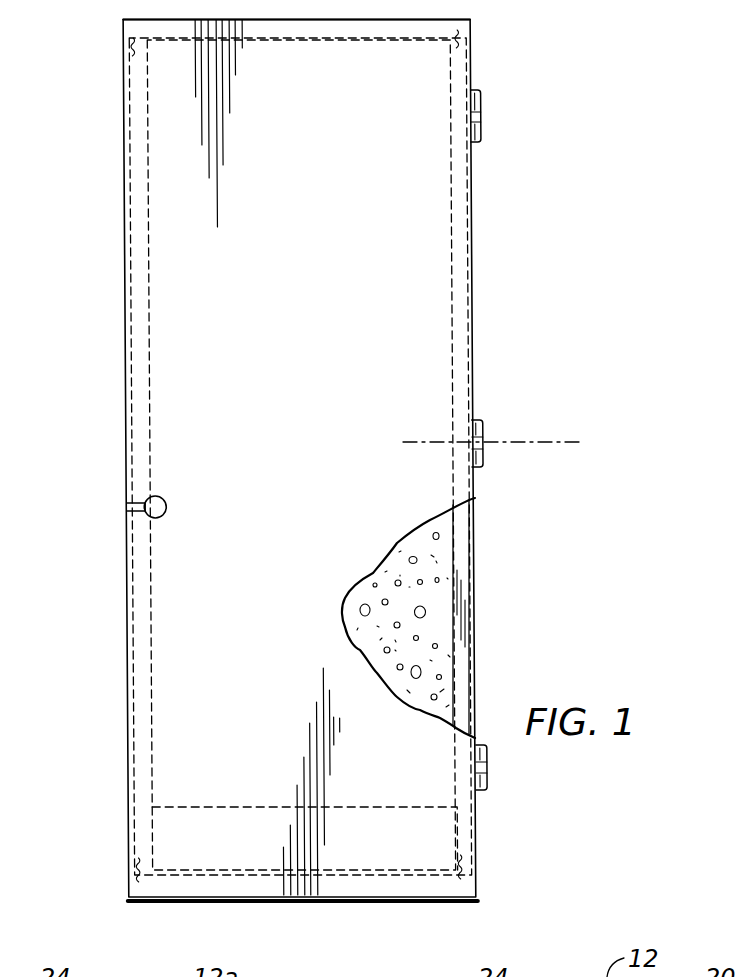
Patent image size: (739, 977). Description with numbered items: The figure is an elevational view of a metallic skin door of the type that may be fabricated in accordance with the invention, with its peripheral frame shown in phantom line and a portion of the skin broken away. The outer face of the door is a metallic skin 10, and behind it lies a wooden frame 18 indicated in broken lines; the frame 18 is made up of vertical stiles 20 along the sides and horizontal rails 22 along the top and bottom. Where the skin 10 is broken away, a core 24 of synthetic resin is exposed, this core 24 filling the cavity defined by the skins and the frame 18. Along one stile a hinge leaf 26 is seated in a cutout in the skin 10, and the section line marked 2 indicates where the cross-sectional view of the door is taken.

The door 10 is at (403, 312).
The inner door panel 18 is at (455, 232).
The flange / frame edge 20 is at (129, 306).
The top and bottom edge members 22 is at (415, 20).
The foam insulation core 24 is at (422, 650).
The hinge 26 is at (480, 466).
The section line 2- 2 is at (557, 474).